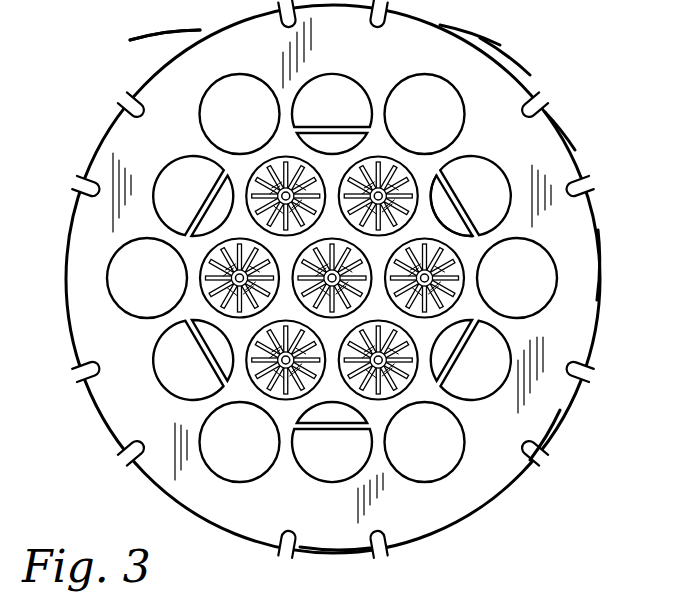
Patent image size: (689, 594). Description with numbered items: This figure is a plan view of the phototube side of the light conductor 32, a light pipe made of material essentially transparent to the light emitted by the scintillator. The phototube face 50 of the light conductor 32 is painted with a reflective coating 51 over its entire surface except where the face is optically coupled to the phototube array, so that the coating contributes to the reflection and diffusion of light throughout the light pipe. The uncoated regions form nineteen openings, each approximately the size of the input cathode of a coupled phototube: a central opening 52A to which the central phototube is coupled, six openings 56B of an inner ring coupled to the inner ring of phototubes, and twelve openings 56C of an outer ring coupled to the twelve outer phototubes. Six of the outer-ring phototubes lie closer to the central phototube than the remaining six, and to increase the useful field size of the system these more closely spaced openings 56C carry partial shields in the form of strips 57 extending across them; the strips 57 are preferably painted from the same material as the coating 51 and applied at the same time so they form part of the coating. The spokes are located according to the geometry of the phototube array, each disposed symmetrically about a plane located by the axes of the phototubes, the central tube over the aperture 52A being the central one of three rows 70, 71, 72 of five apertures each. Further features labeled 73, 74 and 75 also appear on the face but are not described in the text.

The row of apertures 70 is at (92, 291).
The row of apertures 71 is at (188, 62).
The row of apertures 72 is at (462, 63).
The reflective coating 51 is at (502, 90).
The peripheral rim segment 75 is at (529, 164).
The light conductor 32 is at (597, 237).
The central opening 52A is at (483, 206).
The peripheral rim segment 74 is at (539, 404).
The peripheral rim segment 73 is at (332, 487).
The phototube face 50 is at (378, 63).
The openings of inner ring 56B is at (377, 150).
The openings of outer ring 56C is at (332, 278).
The mask strips 57 is at (296, 131).